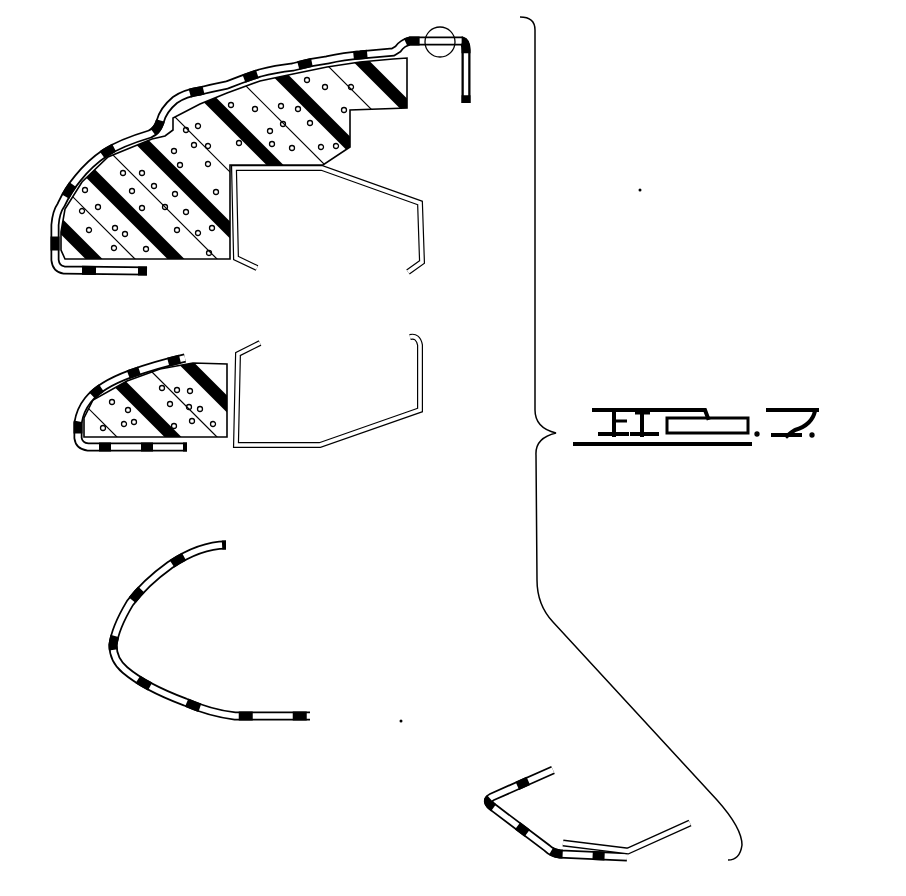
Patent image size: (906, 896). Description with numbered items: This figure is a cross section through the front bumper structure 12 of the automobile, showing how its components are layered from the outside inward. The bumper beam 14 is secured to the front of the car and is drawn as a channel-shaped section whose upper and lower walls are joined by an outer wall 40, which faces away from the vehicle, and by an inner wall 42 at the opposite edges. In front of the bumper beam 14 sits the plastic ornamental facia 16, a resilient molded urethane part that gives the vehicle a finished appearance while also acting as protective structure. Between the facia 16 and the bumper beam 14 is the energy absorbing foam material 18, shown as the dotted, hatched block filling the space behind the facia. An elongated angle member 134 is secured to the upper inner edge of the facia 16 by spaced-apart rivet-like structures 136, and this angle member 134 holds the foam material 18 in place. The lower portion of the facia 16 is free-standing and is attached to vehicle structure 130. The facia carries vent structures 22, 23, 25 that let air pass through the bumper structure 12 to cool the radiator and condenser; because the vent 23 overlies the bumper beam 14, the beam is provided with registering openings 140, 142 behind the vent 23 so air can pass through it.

The bumper structure 12 is at (350, 200).
The bumper beam 14 is at (347, 450).
The facia 16 is at (246, 58).
The energy absorbing foam material 18 is at (386, 116).
The vent structure 22 is at (150, 580).
The vent structure 23 is at (102, 378).
The vent structure 25 is at (513, 777).
The outer wall 40 is at (236, 205).
The inner wall 42 is at (425, 217).
The vehicle structure 130 is at (670, 836).
The angle member 134 is at (470, 100).
The rivet-like structures 136 is at (432, 30).
The opening 140 is at (250, 270).
The opening 142 is at (412, 276).